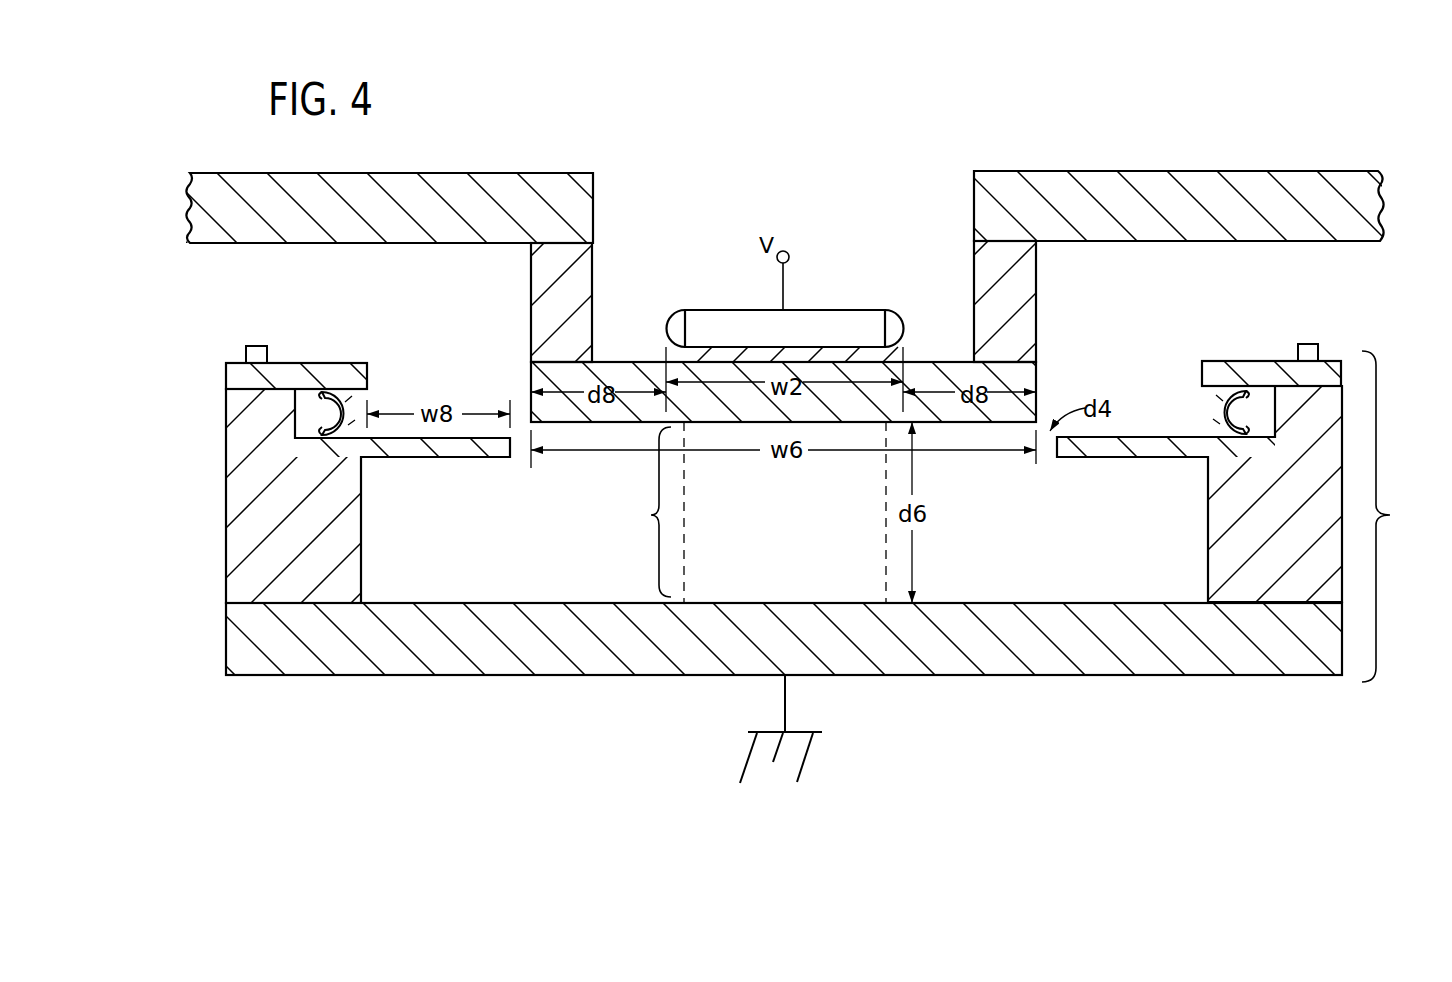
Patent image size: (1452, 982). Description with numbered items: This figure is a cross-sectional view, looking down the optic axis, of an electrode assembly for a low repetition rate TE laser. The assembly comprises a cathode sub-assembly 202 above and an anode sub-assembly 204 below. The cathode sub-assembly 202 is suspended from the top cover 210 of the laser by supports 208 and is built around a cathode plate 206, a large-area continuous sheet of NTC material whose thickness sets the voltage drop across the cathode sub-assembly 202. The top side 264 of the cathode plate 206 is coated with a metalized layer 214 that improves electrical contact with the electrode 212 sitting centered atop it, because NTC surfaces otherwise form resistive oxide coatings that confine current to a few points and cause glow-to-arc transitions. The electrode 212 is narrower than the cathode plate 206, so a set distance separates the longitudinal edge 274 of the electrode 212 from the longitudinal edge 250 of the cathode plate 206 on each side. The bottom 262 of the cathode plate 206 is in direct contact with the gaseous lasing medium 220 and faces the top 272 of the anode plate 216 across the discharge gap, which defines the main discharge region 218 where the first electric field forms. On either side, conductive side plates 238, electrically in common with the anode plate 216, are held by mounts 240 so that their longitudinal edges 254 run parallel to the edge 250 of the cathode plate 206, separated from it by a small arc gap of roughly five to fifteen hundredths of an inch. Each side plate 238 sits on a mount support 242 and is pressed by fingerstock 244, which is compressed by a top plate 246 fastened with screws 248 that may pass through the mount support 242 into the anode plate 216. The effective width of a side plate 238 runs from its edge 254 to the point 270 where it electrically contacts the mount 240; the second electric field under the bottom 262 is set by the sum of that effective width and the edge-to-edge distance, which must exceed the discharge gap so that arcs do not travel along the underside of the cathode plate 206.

The cathode sub-assembly 202 is at (772, 199).
The anode sub-assembly 204 is at (1399, 516).
The cathode plate 206 is at (530, 377).
The supports 208 is at (990, 262).
The top cover 210 is at (1280, 190).
The electrode 212 is at (826, 333).
The metalized layer 214 is at (720, 356).
The anode plate 216 is at (998, 673).
The main discharge region 218 is at (637, 512).
The lasing medium 220 is at (1133, 574).
The conductive side plates 238 is at (463, 448).
The mounts 240 is at (223, 556).
The mount supports 242 is at (322, 575).
The fingerstock 244 is at (1215, 400).
The top plates 246 is at (243, 378).
The screws 248 is at (246, 353).
The longitudinal edge of the cathode plate 250 is at (1044, 375).
The longitudinal edges of the conductive side plates 254 is at (1055, 461).
The bottom of the cathode plate 262 is at (723, 464).
The top side of the cathode plate 264 is at (631, 341).
The point of electrical contact 270 is at (1209, 426).
The top of the anode plate 272 is at (510, 587).
The longitudinal edge of the electrode 274 is at (913, 333).